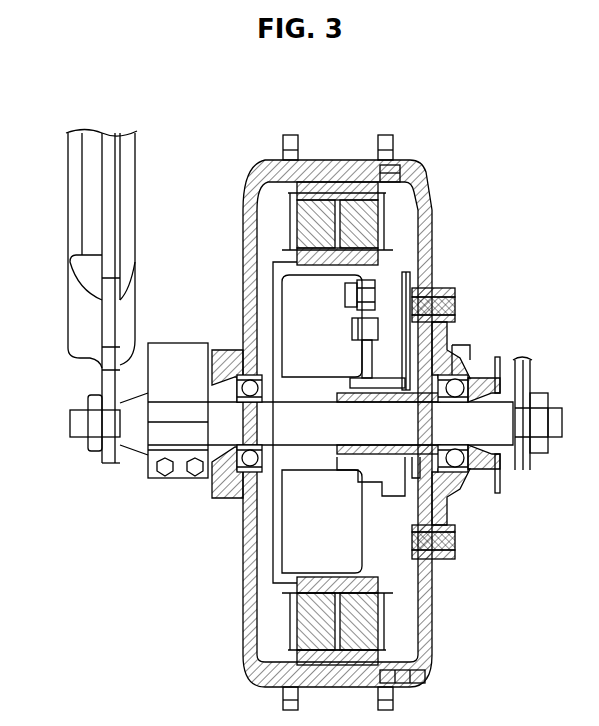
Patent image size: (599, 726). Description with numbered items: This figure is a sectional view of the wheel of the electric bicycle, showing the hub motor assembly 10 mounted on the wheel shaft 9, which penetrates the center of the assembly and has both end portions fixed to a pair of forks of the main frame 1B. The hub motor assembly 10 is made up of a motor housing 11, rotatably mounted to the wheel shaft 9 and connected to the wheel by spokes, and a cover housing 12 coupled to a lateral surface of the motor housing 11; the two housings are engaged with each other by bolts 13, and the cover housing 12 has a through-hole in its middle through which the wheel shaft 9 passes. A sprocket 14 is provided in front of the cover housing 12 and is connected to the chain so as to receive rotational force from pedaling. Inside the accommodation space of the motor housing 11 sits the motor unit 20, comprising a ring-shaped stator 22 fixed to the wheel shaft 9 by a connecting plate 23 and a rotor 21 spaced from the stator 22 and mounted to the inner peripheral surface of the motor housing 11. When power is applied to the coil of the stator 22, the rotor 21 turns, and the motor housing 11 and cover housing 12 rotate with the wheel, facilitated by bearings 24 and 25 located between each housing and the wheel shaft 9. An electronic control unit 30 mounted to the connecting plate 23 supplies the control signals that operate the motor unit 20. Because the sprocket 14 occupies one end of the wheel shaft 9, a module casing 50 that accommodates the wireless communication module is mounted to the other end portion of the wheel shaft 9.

The hub motor assembly 10 is at (450, 166).
The motor housing 11 is at (431, 210).
The cover housing 12 is at (452, 516).
The bolts 13 is at (442, 558).
The sprocket 14 is at (500, 485).
The motor unit 20 is at (277, 196).
The rotor 21 is at (325, 165).
The stator 22 is at (350, 210).
The connecting plate 23 is at (275, 318).
The bearing 24 is at (228, 497).
The bearing 25 is at (470, 478).
The electronic control unit (ECU) 30 is at (352, 313).
The module casing 50 is at (172, 348).
The wheel shaft 9 is at (78, 425).
The main frame 1B is at (76, 196).